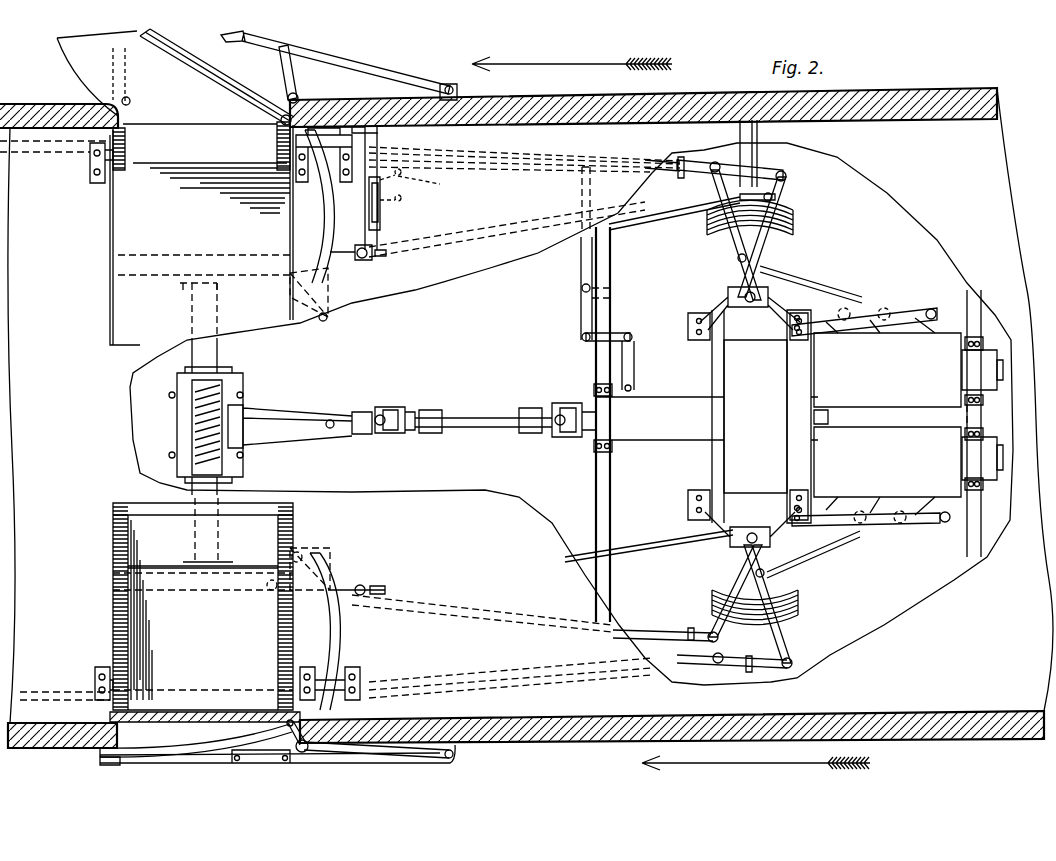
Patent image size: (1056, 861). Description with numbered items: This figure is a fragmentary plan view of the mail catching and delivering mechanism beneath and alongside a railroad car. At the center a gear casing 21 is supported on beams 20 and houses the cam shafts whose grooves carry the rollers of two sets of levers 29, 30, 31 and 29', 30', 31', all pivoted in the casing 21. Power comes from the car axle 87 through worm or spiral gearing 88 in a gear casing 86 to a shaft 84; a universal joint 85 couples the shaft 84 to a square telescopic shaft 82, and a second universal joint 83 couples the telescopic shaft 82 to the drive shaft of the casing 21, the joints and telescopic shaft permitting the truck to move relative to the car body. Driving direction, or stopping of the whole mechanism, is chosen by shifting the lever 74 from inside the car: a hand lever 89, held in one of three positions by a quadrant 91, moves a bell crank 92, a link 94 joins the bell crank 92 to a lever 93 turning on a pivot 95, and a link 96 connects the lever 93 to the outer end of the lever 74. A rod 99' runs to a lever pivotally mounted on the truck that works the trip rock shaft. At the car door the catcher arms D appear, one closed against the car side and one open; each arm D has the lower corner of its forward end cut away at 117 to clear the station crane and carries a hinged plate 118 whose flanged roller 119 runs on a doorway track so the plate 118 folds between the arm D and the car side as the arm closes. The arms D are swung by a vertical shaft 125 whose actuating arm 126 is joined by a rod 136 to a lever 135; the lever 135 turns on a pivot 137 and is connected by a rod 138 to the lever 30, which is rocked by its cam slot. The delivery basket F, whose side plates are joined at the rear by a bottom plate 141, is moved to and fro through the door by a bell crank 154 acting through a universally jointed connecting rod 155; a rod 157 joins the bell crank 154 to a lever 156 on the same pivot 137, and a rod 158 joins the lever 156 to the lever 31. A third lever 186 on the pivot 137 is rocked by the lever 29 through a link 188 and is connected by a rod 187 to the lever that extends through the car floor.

The plate 118 is at (126, 73).
The flanged roller 119 is at (132, 108).
The catcher or receiving arm D is at (229, 72).
The cut-away lower corner 117 is at (302, 398).
The vertical shaft 125 is at (294, 92).
The actuating arm 126 is at (265, 136).
The delivering or discharging basket F is at (167, 143).
The bottom plate 141 is at (181, 167).
The hand lever 89 is at (388, 188).
The quadrant 91 is at (381, 214).
The bell crank 92 is at (432, 188).
The rod 136 is at (552, 157).
The link 94 is at (512, 173).
The rod 157 is at (497, 237).
The universally jointed connecting rod 155 is at (357, 636).
The bell crank 154 is at (313, 318).
The car axle 87 is at (218, 343).
The worm or spiral gearing 88 is at (192, 417).
The gear casing 86 is at (255, 402).
The shaft 84 is at (344, 437).
The universal joint 85 is at (389, 434).
The telescopic shaft 82 is at (480, 424).
The universal joint 83 is at (552, 434).
The beams 20 is at (608, 307).
The pivot 95 is at (581, 272).
The lever 93 is at (582, 289).
The link 96 is at (614, 336).
The lever 74 is at (628, 372).
The rod 99' is at (649, 528).
The rod 187 is at (732, 160).
The lever 186 is at (787, 181).
The lever 135 is at (733, 240).
The lever 156 is at (783, 205).
The pivot 137 is at (728, 288).
The rod 138 is at (800, 280).
The link 188 is at (833, 296).
The rod 158 is at (904, 310).
The gear casing 21 is at (796, 416).
The lever 29 is at (887, 370).
The lever 30 is at (940, 361).
The lever 31 is at (960, 358).
The lever 29' is at (887, 465).
The lever 30' is at (944, 472).
The lever 31' is at (965, 466).